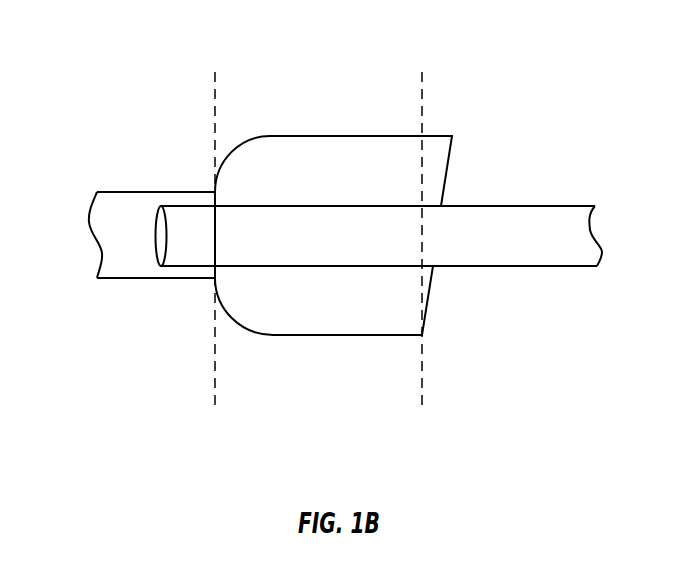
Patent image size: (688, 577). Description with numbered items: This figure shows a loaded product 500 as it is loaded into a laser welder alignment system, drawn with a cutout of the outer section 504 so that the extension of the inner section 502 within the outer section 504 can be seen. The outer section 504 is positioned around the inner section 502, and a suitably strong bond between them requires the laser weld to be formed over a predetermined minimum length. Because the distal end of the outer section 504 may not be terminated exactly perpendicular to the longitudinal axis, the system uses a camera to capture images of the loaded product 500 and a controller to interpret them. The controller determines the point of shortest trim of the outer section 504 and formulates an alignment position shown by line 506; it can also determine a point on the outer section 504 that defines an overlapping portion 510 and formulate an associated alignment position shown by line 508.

The loaded product 500 is at (134, 55).
The inner section 502 is at (503, 258).
The outer section 504 is at (127, 272).
The line 506 is at (422, 79).
The line 508 is at (215, 79).
The overlapping portion 510 is at (302, 325).